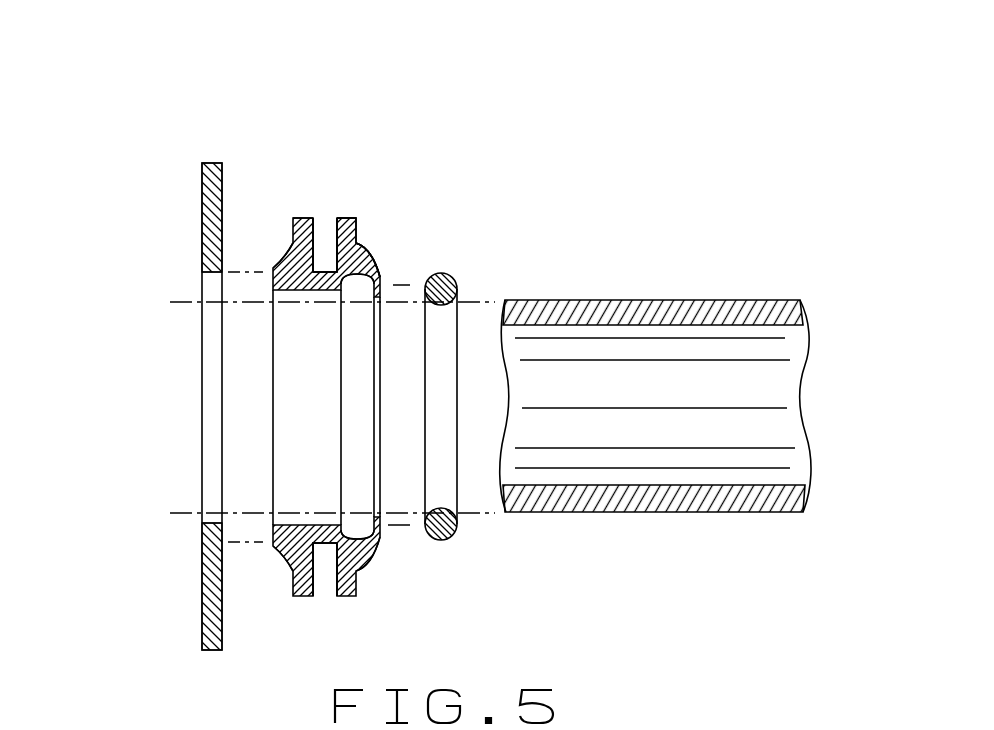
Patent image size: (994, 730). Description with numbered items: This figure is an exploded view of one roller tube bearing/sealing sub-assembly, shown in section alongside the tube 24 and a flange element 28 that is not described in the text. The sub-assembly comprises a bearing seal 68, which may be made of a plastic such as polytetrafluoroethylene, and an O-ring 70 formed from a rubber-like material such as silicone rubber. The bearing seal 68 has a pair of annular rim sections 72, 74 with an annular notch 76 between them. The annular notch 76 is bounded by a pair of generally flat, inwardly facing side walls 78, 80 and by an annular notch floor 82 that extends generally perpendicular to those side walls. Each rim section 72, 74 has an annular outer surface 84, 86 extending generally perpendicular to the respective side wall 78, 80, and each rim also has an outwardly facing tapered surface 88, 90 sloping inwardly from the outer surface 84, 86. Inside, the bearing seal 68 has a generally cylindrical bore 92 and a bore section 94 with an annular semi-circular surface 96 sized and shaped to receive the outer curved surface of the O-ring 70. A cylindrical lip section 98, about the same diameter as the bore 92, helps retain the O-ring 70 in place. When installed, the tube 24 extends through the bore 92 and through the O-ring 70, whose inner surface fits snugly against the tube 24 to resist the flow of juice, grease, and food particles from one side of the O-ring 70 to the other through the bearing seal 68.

The tube 24 is at (706, 292).
The flange 28 is at (172, 147).
The bearing seal 68 is at (368, 172).
The O-ring 70 is at (464, 262).
The annular rim section 72 is at (293, 112).
The annular rim section 74 is at (403, 170).
The annular notch 76 is at (325, 147).
The side wall 78 is at (314, 240).
The side wall 80 is at (338, 218).
The annular notch floor 82 is at (325, 268).
The annular outer surface 84 is at (300, 215).
The annular outer surface 86 is at (342, 217).
The tapered surface 88 is at (290, 252).
The tapered surface 90 is at (366, 252).
The cylindrical bore 92 is at (295, 377).
The bore section 94 is at (355, 455).
The annular semi-circular surface 96 is at (385, 312).
The cylindrical lip section 98 is at (383, 527).